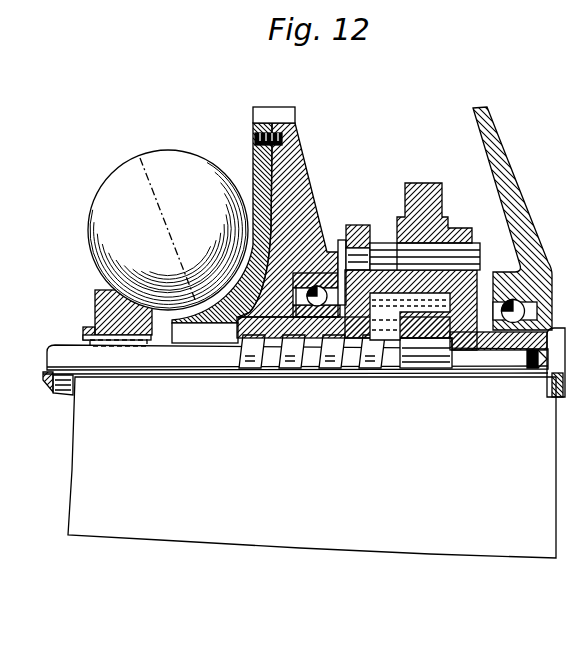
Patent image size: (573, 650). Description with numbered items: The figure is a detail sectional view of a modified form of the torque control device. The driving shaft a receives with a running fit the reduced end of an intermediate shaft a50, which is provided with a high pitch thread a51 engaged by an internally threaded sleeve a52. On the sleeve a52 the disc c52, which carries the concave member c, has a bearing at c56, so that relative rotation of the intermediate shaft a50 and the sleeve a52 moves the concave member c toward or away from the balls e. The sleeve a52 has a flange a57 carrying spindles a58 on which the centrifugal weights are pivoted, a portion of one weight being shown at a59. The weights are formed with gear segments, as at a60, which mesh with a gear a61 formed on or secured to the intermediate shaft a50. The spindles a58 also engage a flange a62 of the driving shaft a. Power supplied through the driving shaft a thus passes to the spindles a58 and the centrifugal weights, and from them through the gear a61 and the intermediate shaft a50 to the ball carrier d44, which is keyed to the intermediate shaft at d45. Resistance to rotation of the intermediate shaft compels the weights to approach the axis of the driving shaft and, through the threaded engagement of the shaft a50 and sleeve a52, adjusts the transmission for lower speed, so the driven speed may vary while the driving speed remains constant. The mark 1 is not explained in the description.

The driving shaft a is at (525, 367).
The intermediate shaft a50 is at (213, 362).
The high pitch thread a51 is at (325, 360).
The internally threaded sleeve a52 is at (318, 337).
The flange a57 is at (368, 225).
The spindles a58 is at (467, 253).
The centrifugal weight a59 is at (428, 208).
The gear segments a60 is at (437, 317).
The gear a61 is at (422, 312).
The flange a62 is at (467, 283).
The concave member c is at (253, 162).
The disc c52 is at (305, 180).
The bearing c56 is at (332, 255).
The ball carrier d44 is at (100, 323).
The key d45 is at (122, 345).
The balls e is at (168, 230).
The clip 1 is at (556, 362).